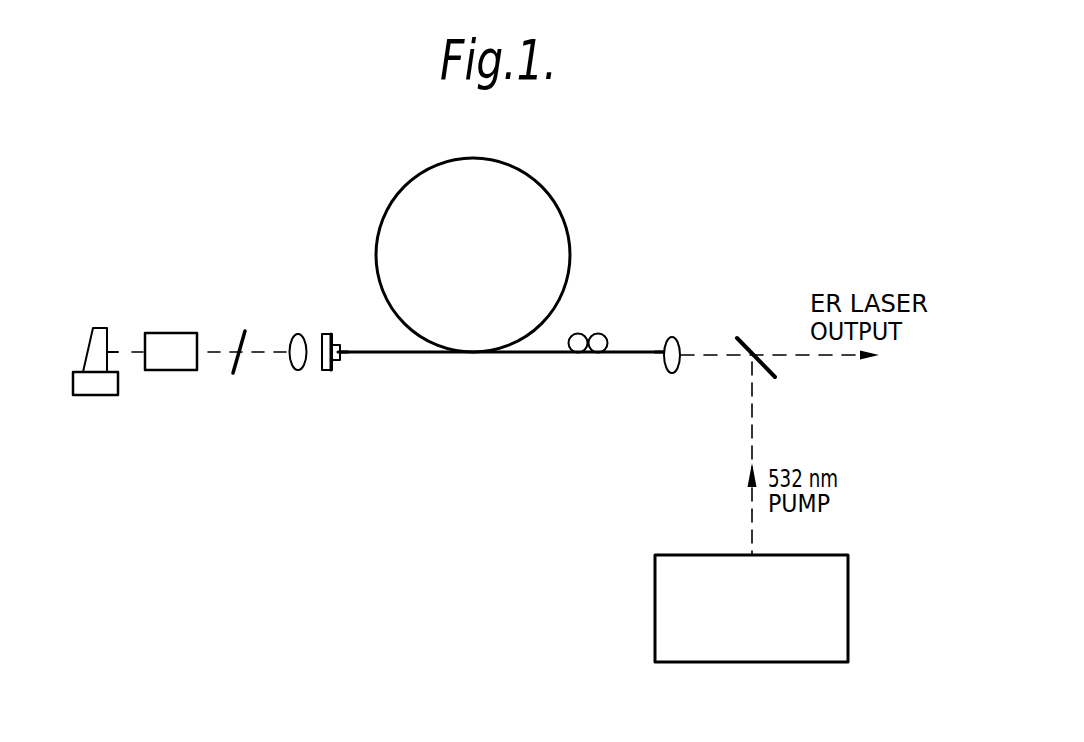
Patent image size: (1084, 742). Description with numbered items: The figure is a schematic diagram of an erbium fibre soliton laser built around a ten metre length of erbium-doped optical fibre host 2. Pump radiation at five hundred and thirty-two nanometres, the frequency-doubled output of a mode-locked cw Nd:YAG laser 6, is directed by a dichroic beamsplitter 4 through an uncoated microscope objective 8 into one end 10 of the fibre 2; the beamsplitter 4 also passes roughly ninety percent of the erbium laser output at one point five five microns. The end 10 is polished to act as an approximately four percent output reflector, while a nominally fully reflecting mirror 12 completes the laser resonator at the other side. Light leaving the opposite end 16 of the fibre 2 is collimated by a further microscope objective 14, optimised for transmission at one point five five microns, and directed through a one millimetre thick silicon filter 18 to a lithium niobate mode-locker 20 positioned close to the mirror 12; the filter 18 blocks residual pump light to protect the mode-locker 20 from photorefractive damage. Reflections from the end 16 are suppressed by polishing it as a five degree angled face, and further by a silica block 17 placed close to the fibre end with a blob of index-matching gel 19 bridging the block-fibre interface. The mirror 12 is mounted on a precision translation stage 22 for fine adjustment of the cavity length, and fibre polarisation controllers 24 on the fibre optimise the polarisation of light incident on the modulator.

The optical fibre host 2 is at (557, 203).
The dichroic beamsplitter 4 is at (747, 338).
The mode-locked cw Nd:YAG laser 6 is at (655, 583).
The uncoated microscope objective 8 is at (673, 338).
The end of the fibre 10 is at (662, 350).
The mirror 12 is at (110, 337).
The further microscope objective 14 is at (298, 337).
The end of the fibre 16 is at (338, 348).
The silica block 17 is at (323, 372).
The silicon filter 18 is at (241, 333).
The index-matching gel 19 is at (337, 360).
The lithium niobate mode-locker 20 is at (170, 333).
The precision translation stage 22 is at (92, 385).
The fibre polarisation controllers 24 is at (587, 354).